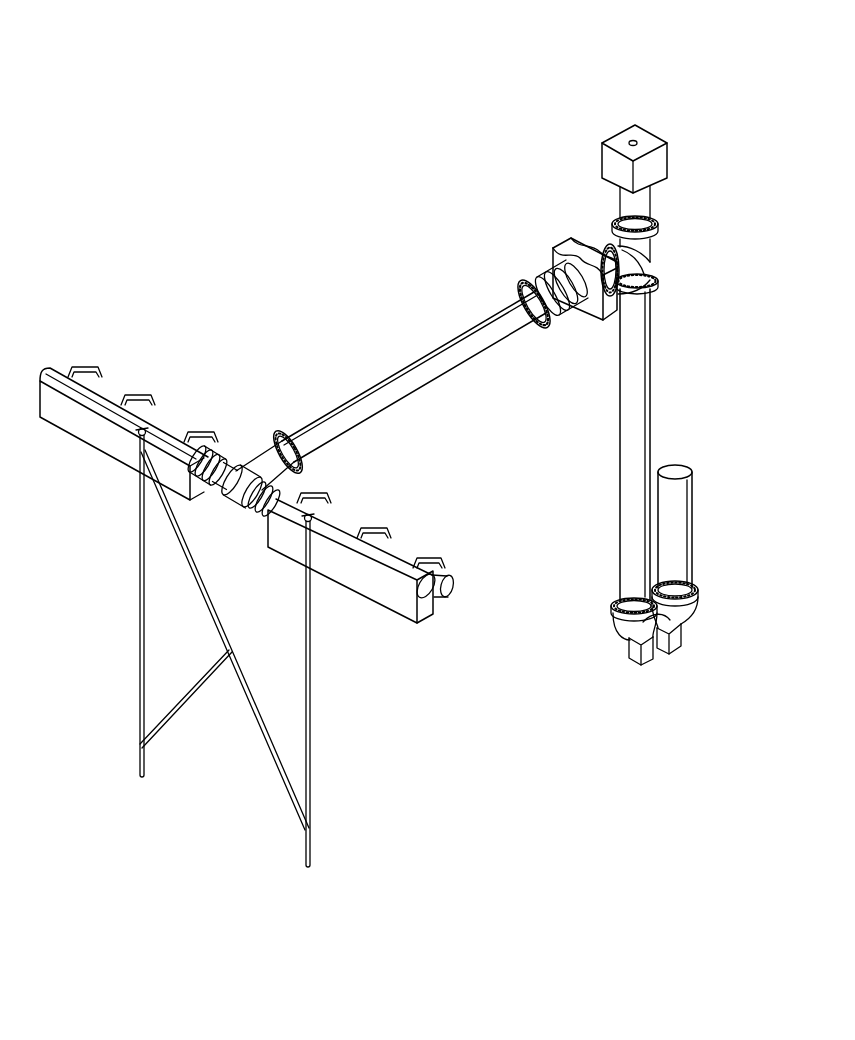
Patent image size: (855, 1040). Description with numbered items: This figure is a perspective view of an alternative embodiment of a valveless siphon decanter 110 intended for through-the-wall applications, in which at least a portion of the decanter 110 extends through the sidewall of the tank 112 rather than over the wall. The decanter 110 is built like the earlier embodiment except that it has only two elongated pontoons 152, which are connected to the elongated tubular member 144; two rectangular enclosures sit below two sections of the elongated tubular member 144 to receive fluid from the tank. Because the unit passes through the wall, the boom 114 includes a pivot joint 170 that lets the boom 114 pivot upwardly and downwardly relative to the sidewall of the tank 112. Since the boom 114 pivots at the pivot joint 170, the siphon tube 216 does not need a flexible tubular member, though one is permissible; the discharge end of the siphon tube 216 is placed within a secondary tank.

The decanter 110 is at (703, 60).
The tank 112 is at (557, 244).
The boom 114 is at (426, 376).
The elongated tubular member 144 is at (53, 380).
The elongated pontoon 152 is at (98, 380).
The pivot joint 170 is at (542, 282).
The siphon tube 216 is at (636, 334).